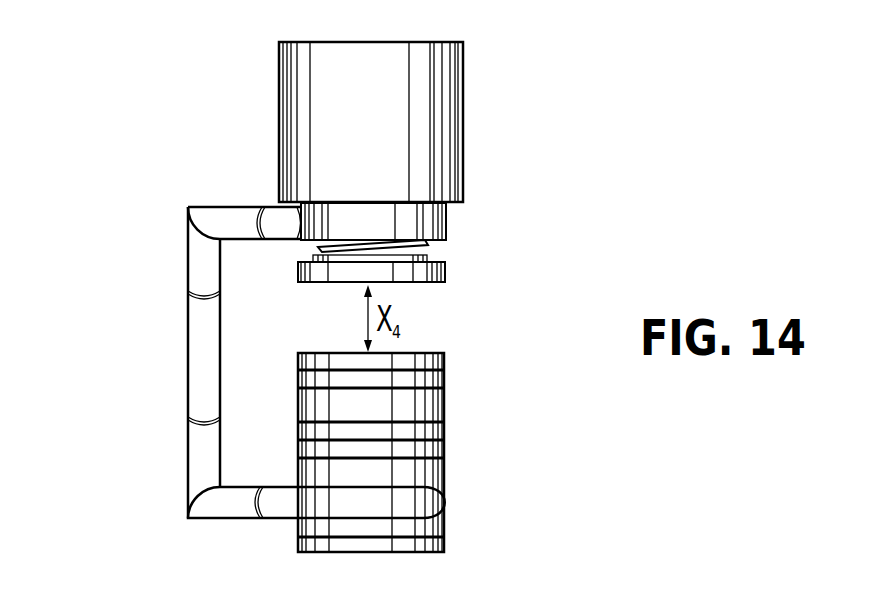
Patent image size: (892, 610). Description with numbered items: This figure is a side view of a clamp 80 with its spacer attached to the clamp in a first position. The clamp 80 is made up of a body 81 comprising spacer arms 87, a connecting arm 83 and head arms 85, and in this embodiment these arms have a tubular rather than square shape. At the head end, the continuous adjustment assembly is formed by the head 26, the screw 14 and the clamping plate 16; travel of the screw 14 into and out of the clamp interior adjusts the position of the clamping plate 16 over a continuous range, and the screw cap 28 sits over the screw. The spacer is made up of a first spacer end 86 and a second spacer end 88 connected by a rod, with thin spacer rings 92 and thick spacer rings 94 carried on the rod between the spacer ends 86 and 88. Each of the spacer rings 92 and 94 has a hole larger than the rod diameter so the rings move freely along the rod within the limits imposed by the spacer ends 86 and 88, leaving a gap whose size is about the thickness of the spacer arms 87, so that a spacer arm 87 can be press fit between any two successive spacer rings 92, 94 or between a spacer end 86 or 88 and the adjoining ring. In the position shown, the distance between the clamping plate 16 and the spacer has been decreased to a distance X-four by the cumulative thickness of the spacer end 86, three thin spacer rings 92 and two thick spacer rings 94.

The clamp 80 is at (187, 107).
The clamp body 81 is at (152, 300).
The connecting arm 83 is at (188, 388).
The head arms 85 is at (232, 206).
The spacer arms 87 is at (240, 520).
The screw cap 28 is at (464, 108).
The head 26 is at (447, 215).
The screw 14 is at (428, 240).
The clamping plate 16 is at (447, 272).
The first spacer end 86 is at (446, 362).
The thin spacer rings 92 is at (446, 380).
The thick spacer rings 94 is at (446, 403).
The second spacer end 88 is at (446, 547).